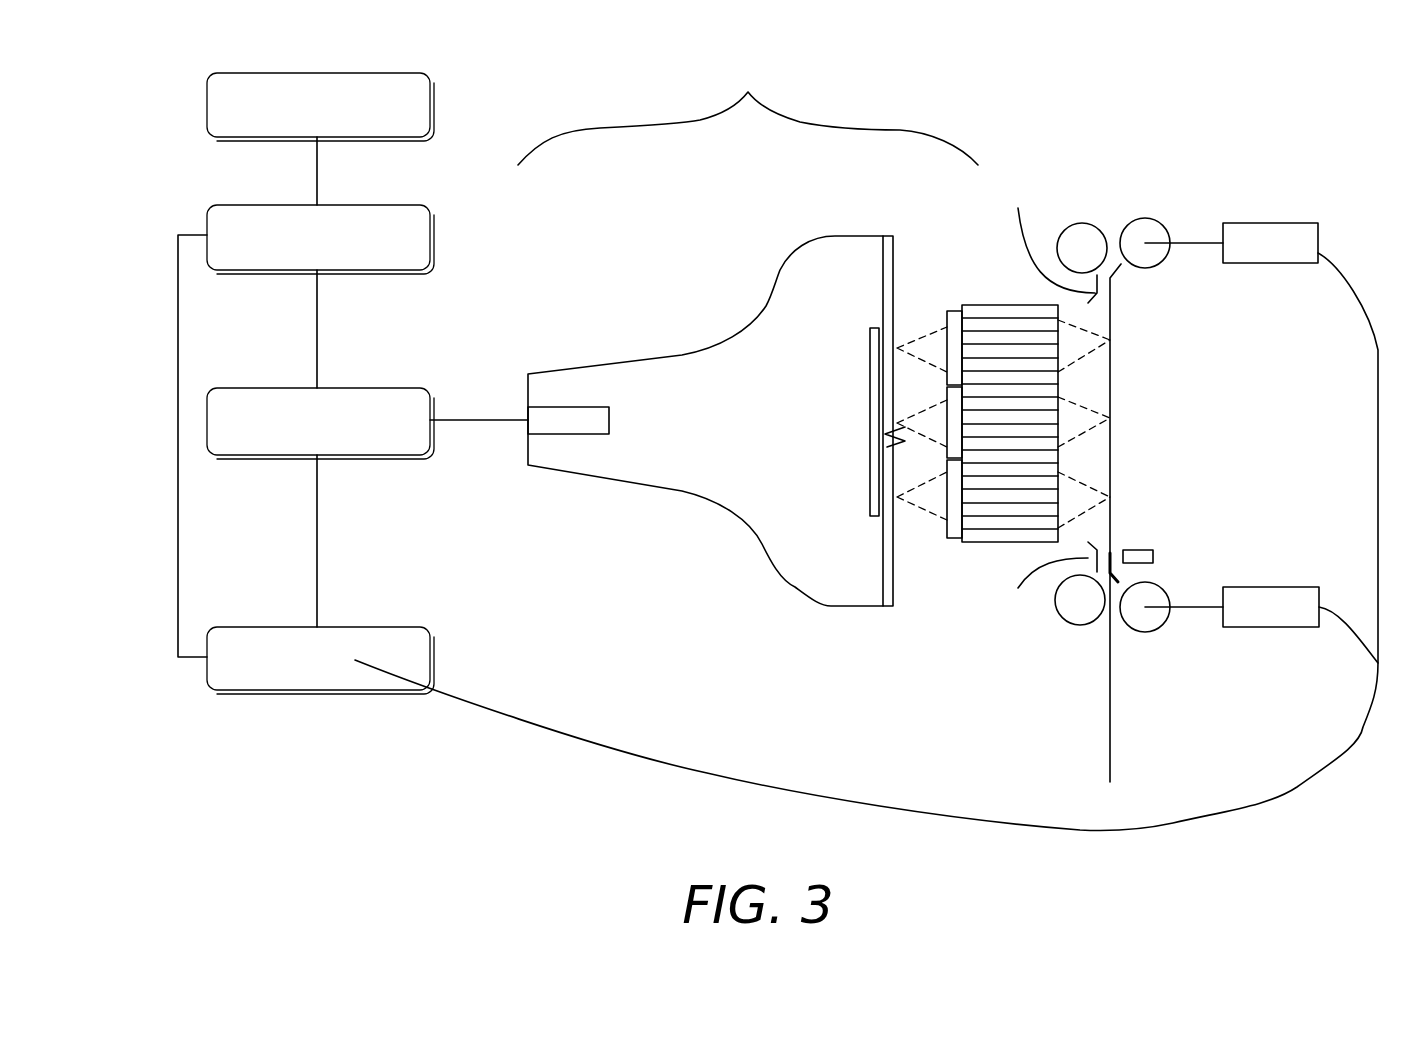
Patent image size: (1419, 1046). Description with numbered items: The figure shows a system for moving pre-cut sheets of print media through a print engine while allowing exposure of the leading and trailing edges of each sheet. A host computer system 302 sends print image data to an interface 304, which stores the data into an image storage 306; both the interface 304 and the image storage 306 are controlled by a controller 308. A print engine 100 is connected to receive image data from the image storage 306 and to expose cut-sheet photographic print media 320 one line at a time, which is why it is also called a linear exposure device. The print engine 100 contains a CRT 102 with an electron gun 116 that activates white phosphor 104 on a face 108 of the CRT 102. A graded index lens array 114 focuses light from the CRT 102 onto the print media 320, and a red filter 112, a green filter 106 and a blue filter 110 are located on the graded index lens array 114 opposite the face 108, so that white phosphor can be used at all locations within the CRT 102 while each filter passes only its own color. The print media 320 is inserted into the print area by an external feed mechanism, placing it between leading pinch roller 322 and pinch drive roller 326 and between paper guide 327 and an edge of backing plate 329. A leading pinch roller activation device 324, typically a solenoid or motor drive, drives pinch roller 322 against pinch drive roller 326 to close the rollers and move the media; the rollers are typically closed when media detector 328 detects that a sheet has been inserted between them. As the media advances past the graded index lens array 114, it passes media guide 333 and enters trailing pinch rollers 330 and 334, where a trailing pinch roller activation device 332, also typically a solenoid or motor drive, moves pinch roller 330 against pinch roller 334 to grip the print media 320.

The print engine 100 is at (748, 112).
The CRT 102 is at (749, 321).
The white phosphor 104 is at (870, 357).
The green filter 106 is at (893, 445).
The face 108 is at (886, 239).
The blue filter 110 is at (945, 498).
The red filter 112 is at (947, 337).
The graded index lens array 114 is at (988, 305).
The electron gun 116 is at (610, 423).
The host computer system 302 is at (432, 108).
The interface 304 is at (432, 240).
The image storage 306 is at (410, 388).
The controller 308 is at (378, 627).
The cut-sheet photographic print media 320 is at (1110, 742).
The leading pinch roller 322 is at (1150, 632).
The leading pinch roller activation device 324 is at (1270, 588).
The pinch drive roller 326 is at (1085, 625).
The paper guide 327 is at (1038, 583).
The media detector 328 is at (1146, 550).
The backing plate 329 is at (1113, 432).
The trailing pinch roller 330 is at (1150, 218).
The trailing pinch roller activation device 332 is at (1273, 263).
The media guide 333 is at (1042, 239).
The trailing pinch roller 334 is at (1077, 223).